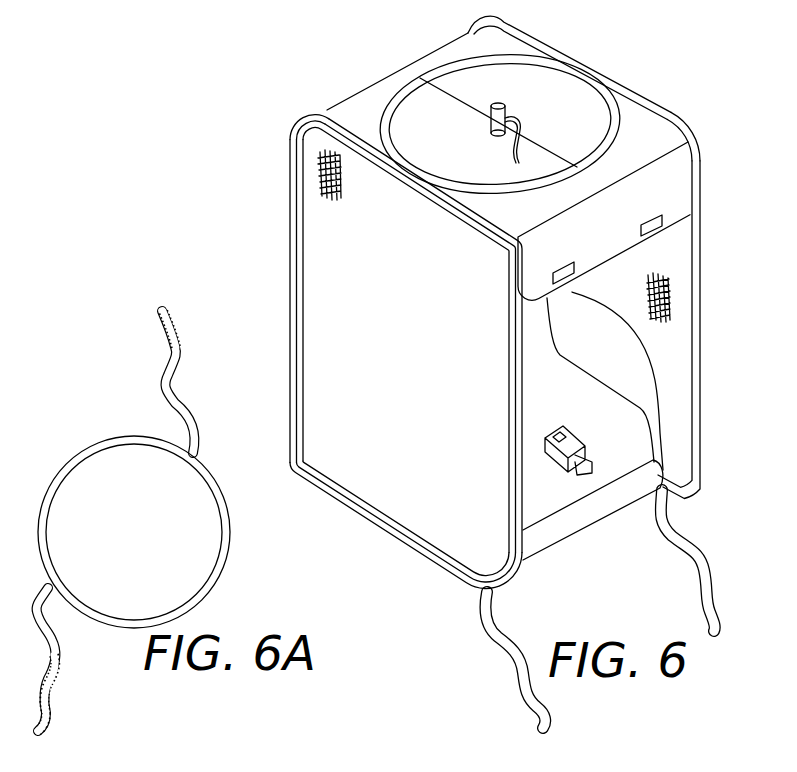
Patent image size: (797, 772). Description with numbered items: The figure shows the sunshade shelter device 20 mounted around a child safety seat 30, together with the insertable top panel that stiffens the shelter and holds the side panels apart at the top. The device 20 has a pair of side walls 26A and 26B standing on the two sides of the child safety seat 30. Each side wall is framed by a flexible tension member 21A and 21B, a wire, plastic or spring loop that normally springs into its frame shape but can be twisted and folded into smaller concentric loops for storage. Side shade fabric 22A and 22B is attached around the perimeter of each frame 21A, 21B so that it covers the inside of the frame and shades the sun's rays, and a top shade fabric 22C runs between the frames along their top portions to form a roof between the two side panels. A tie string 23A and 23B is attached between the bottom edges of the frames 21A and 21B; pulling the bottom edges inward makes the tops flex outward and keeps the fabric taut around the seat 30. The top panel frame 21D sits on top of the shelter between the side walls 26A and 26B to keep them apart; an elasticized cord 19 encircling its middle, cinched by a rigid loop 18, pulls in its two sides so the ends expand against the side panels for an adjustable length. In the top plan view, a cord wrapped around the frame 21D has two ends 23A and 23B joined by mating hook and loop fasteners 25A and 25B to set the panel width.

In FIG. 6, the rigid loop 18 is at (490, 128).
In FIG. 6, the elasticized cord 19 is at (555, 153).
In FIG. 6, the sunshade shelter device 20 is at (242, 160).
In FIG. 6, the flexible tension member 21A is at (396, 538).
In FIG. 6, the flexible tension member 21B is at (697, 278).
In FIG. 6, the top panel frame 21D is at (502, 52).
In FIG. 6A, the top panel frame 21D is at (58, 480).
In FIG. 6, the side shade fabric 22A is at (313, 187).
In FIG. 6, the side shade fabric 22B is at (673, 328).
In FIG. 6, the top shade fabric 22C is at (362, 107).
In FIG. 6, the tie string 23A is at (522, 700).
In FIG. 6A, the tie string 23A is at (50, 702).
In FIG. 6, the tie string 23B is at (717, 593).
In FIG. 6A, the tie string 23B is at (160, 334).
In FIG. 6A, the hook and loop fastener 25A is at (48, 718).
In FIG. 6A, the hook and loop fastener 25B is at (210, 347).
In FIG. 6, the side wall 26A is at (296, 132).
In FIG. 6, the side wall 26B is at (706, 162).
In FIG. 6, the child safety seat 30 is at (570, 488).